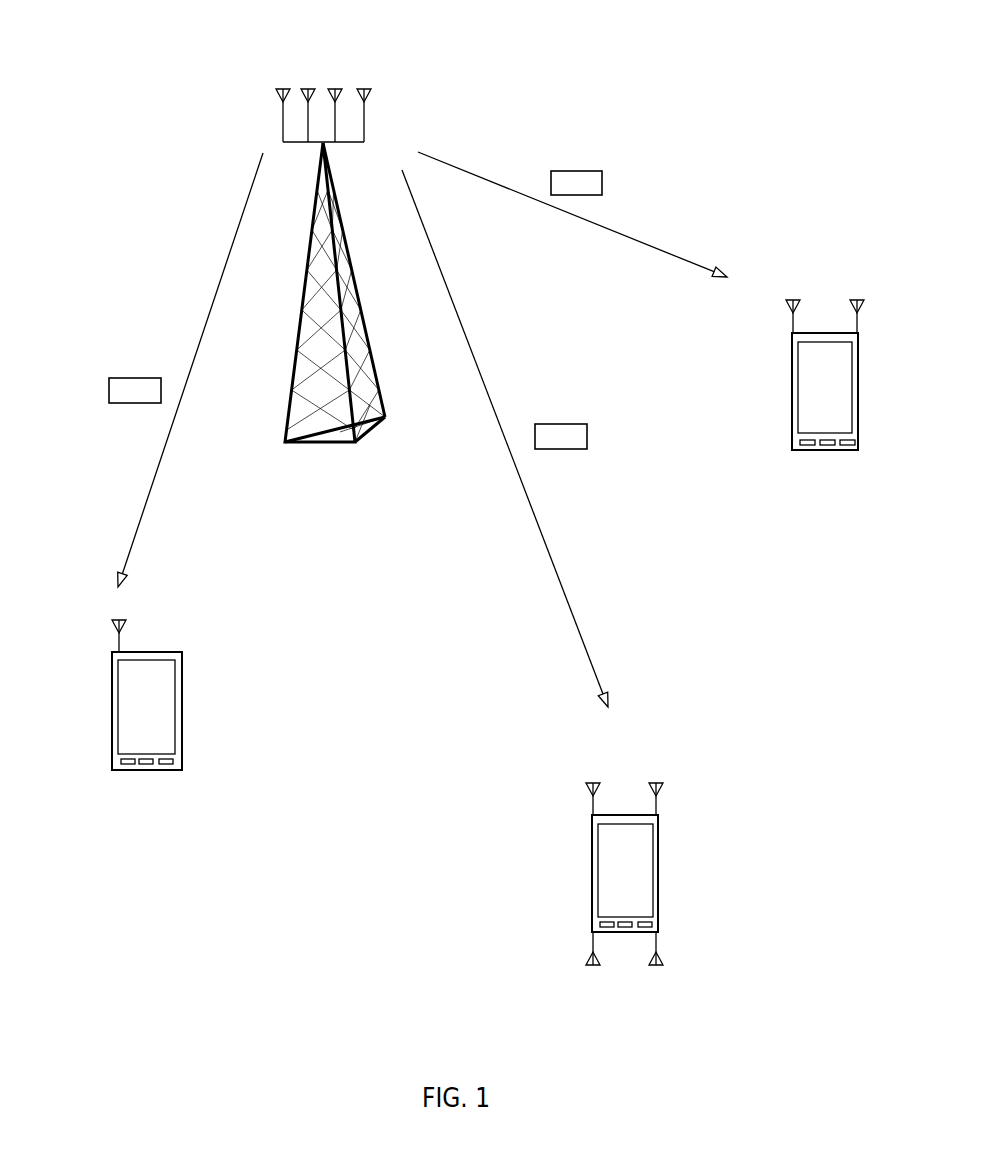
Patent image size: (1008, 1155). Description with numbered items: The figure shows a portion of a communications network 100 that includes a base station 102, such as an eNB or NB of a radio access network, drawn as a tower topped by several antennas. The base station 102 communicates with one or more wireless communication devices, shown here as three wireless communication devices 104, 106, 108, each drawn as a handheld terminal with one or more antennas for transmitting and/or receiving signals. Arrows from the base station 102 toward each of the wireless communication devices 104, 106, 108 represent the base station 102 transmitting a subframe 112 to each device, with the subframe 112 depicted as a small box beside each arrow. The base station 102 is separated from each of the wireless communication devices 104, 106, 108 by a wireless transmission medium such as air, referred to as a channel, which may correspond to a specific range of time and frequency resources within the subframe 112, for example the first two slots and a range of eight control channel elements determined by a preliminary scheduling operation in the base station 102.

The communications network 100 is at (152, 70).
The base station 102 is at (293, 335).
The wireless communication device 104 is at (787, 400).
The wireless communication device 106 is at (100, 717).
The wireless communication device 108 is at (585, 860).
The subframe 112 is at (551, 175).